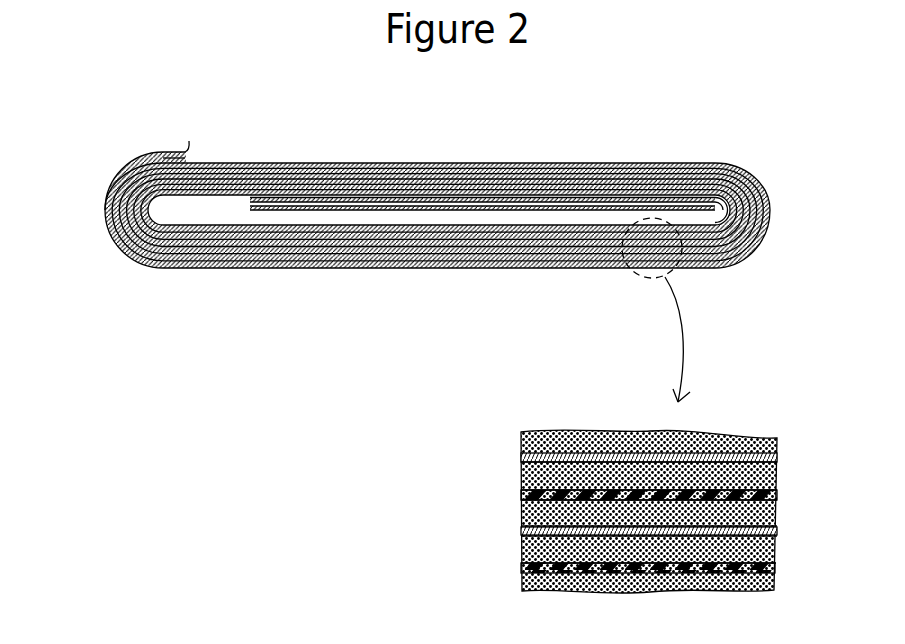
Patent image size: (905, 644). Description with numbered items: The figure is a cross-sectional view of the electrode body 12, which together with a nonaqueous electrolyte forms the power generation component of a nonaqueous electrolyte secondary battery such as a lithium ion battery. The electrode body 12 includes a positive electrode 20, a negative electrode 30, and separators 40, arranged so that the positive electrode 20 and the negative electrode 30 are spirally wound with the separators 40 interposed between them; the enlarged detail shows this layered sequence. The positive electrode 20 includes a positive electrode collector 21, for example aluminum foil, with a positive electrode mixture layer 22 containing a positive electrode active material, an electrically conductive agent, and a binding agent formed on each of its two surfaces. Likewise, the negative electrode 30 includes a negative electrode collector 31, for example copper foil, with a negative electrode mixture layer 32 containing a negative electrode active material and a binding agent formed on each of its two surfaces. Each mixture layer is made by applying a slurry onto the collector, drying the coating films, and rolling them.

The electrode body 12 is at (734, 128).
The positive electrode 20 is at (108, 250).
The positive electrode collector 21 is at (774, 454).
The positive electrode mixture layer 22 is at (773, 473).
The negative electrode 30 is at (107, 197).
The negative electrode collector 31 is at (774, 531).
The negative electrode mixture layer 32 is at (774, 511).
The separator 40 is at (250, 200).